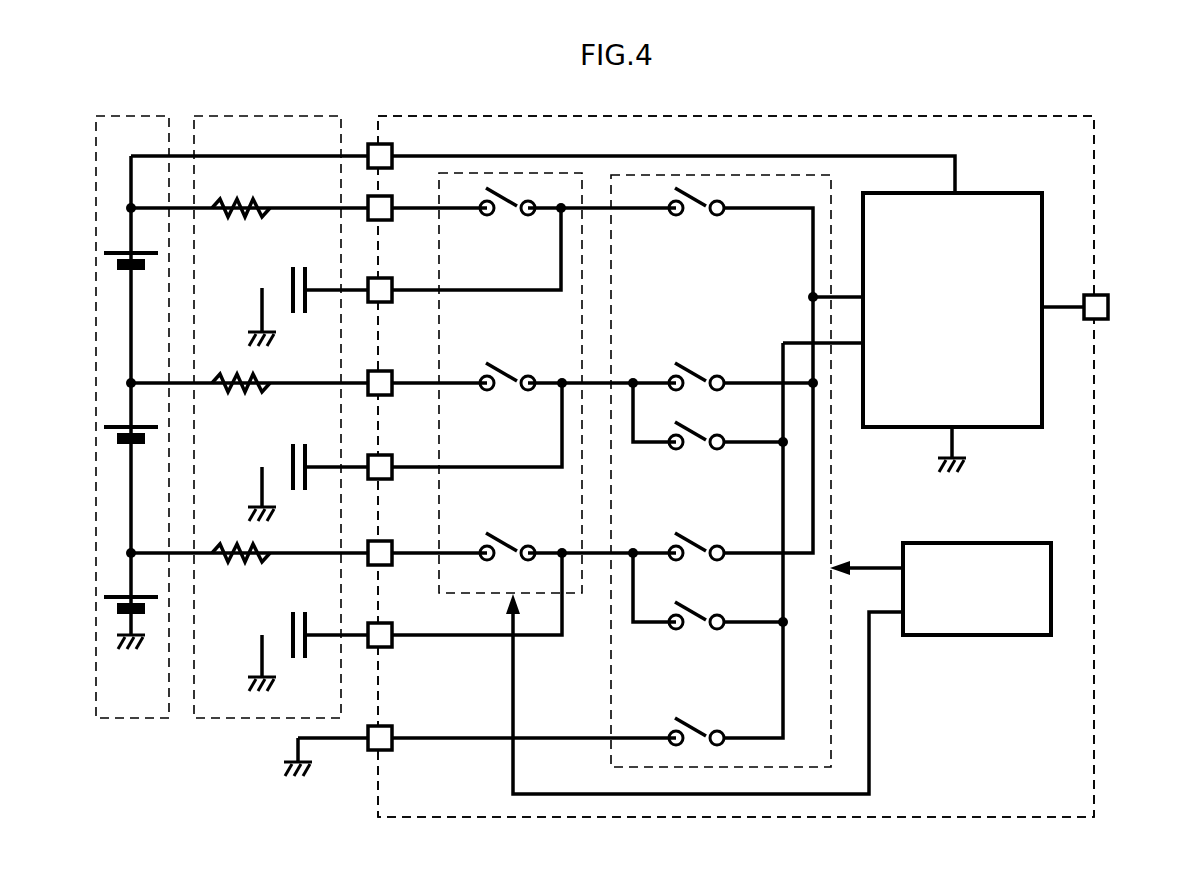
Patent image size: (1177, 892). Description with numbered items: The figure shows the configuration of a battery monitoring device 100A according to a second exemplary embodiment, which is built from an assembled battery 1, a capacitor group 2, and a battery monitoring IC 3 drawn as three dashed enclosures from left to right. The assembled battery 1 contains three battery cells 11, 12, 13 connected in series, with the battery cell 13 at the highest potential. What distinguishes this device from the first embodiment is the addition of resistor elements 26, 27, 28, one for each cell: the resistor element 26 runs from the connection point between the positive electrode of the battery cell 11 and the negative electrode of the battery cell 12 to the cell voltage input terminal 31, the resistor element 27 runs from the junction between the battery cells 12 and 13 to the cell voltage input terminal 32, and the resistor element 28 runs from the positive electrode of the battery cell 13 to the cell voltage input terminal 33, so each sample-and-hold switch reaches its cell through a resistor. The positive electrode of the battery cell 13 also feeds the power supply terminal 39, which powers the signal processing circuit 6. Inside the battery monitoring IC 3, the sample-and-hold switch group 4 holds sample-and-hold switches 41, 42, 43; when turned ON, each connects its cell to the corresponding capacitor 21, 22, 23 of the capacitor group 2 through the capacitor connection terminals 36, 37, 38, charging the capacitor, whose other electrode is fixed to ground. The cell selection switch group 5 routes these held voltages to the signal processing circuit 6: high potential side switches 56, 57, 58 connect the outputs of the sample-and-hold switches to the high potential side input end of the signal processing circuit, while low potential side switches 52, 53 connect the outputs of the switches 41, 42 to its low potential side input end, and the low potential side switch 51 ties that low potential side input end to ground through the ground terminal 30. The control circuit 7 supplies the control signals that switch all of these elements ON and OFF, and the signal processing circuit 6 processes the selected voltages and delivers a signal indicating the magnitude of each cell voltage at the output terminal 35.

The battery monitoring device 100A is at (957, 96).
The assembled battery 1 is at (135, 116).
The capacitor group 2 is at (264, 116).
The battery monitoring IC 3 is at (672, 116).
The sample-and-hold switch group 4 is at (442, 590).
The cell selection switch group 5 is at (833, 478).
The signal processing circuit 6 is at (985, 193).
The control circuit 7 is at (975, 543).
The battery cell 11 is at (107, 595).
The battery cell 12 is at (107, 424).
The battery cell 13 is at (107, 248).
The capacitor 21 is at (290, 620).
The capacitor 22 is at (290, 450).
The capacitor 23 is at (290, 276).
The resistor element 26 is at (226, 545).
The resistor element 27 is at (226, 375).
The resistor element 28 is at (226, 201).
The ground terminal 30 is at (394, 746).
The cell voltage input terminal 31 is at (394, 561).
The cell voltage input terminal 32 is at (394, 391).
The cell voltage input terminal 33 is at (394, 216).
The output terminal 35 is at (1110, 305).
The capacitor connection terminal 36 is at (394, 643).
The capacitor connection terminal 37 is at (394, 475).
The capacitor connection terminal 38 is at (394, 298).
The power supply terminal 39 is at (394, 164).
The sample-and-hold switch 41 is at (510, 536).
The sample-and-hold switch 42 is at (510, 366).
The sample-and-hold switch 43 is at (502, 211).
The low potential side switch 51 is at (715, 730).
The low potential side switch 52 is at (715, 616).
The low potential side switch 53 is at (715, 434).
The high potential side switch 56 is at (715, 546).
The high potential side switch 57 is at (715, 376).
The high potential side switch 58 is at (704, 211).